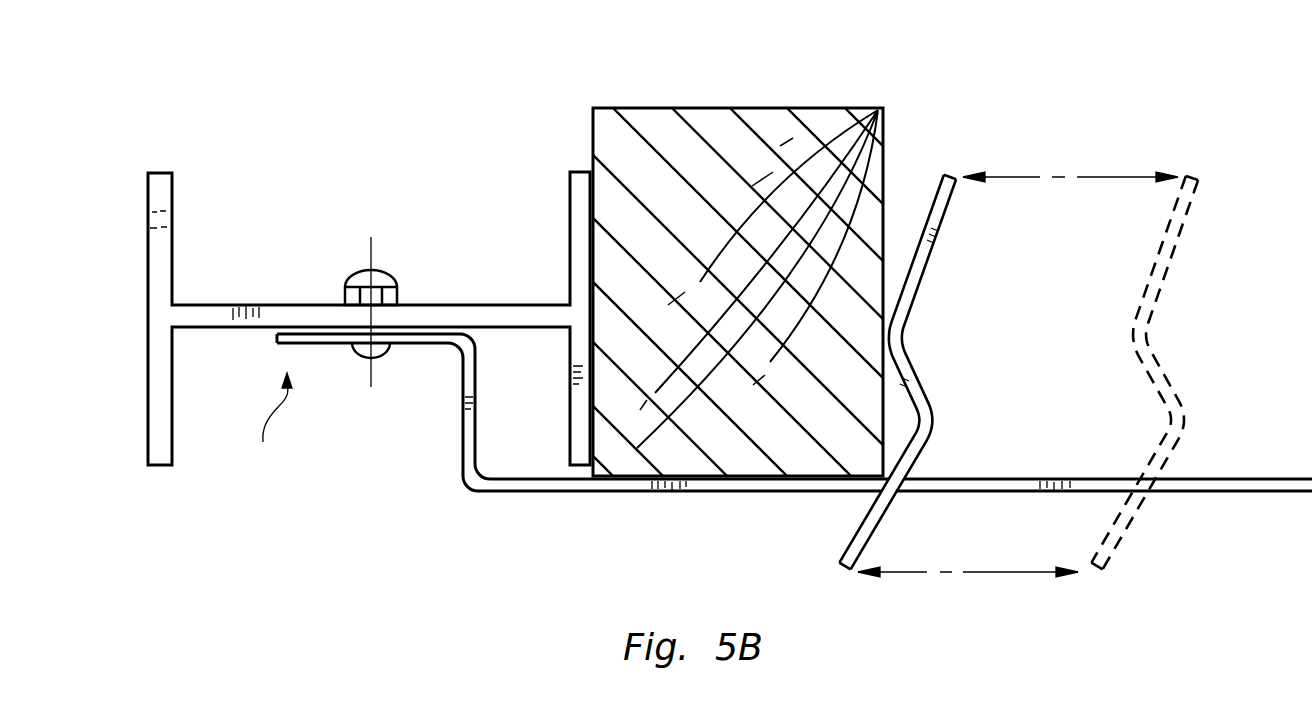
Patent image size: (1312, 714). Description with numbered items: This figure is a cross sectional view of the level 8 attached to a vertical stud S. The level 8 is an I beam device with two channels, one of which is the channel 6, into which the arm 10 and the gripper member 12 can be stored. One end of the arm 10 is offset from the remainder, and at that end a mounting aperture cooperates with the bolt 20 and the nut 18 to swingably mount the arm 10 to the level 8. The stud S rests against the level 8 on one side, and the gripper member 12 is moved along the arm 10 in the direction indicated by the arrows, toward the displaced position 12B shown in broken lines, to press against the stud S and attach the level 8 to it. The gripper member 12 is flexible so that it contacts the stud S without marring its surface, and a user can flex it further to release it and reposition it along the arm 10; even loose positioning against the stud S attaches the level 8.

The channel 6 is at (273, 422).
The level 8 is at (172, 465).
The arm 10 is at (533, 493).
The gripper member 12 is at (873, 537).
The spring plate in deflected position 12B is at (1117, 533).
The nut 18 is at (392, 277).
The bolt 20 is at (385, 358).
The vertical stud S is at (687, 108).